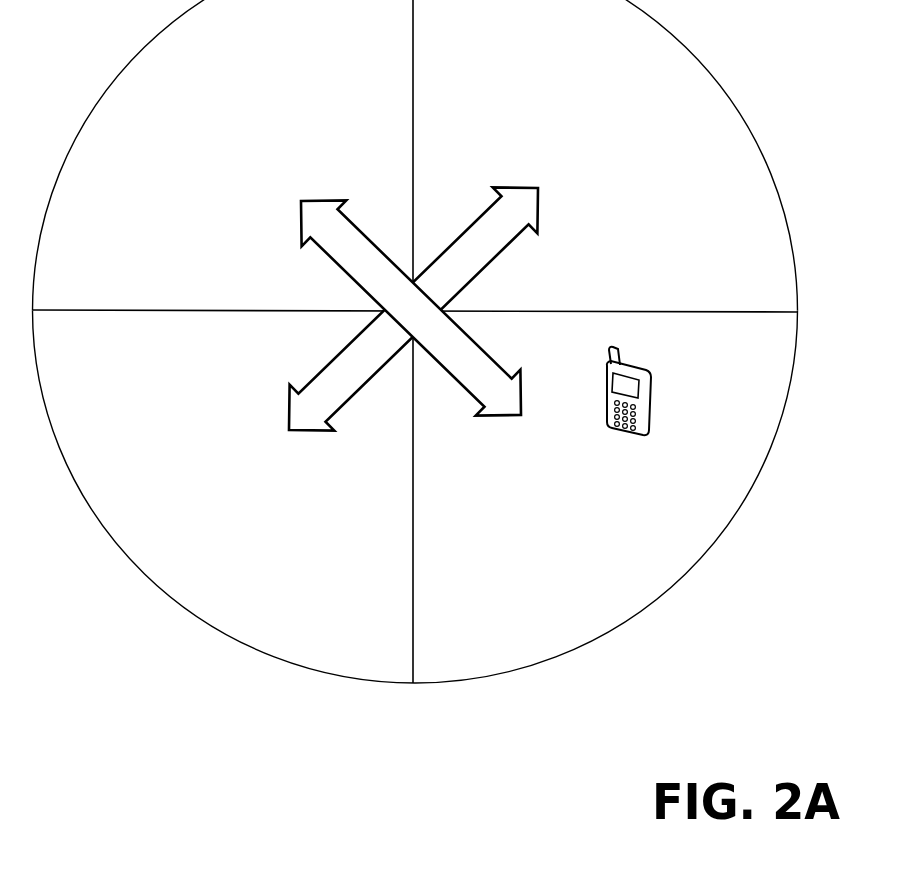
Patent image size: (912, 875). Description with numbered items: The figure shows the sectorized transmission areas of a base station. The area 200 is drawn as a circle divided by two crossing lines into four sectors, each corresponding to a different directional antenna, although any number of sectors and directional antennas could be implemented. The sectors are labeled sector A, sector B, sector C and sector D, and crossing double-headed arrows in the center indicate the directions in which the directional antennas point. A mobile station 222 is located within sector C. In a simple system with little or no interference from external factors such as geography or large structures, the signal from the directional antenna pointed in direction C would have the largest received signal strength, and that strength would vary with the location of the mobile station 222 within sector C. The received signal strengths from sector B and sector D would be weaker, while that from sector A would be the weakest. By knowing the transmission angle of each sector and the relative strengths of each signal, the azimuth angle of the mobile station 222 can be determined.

The area 200 is at (415, 364).
The mobile station 222 is at (648, 369).
The sector A is at (224, 155).
The sector B is at (606, 155).
The sector C is at (606, 497).
The sector D is at (224, 497).